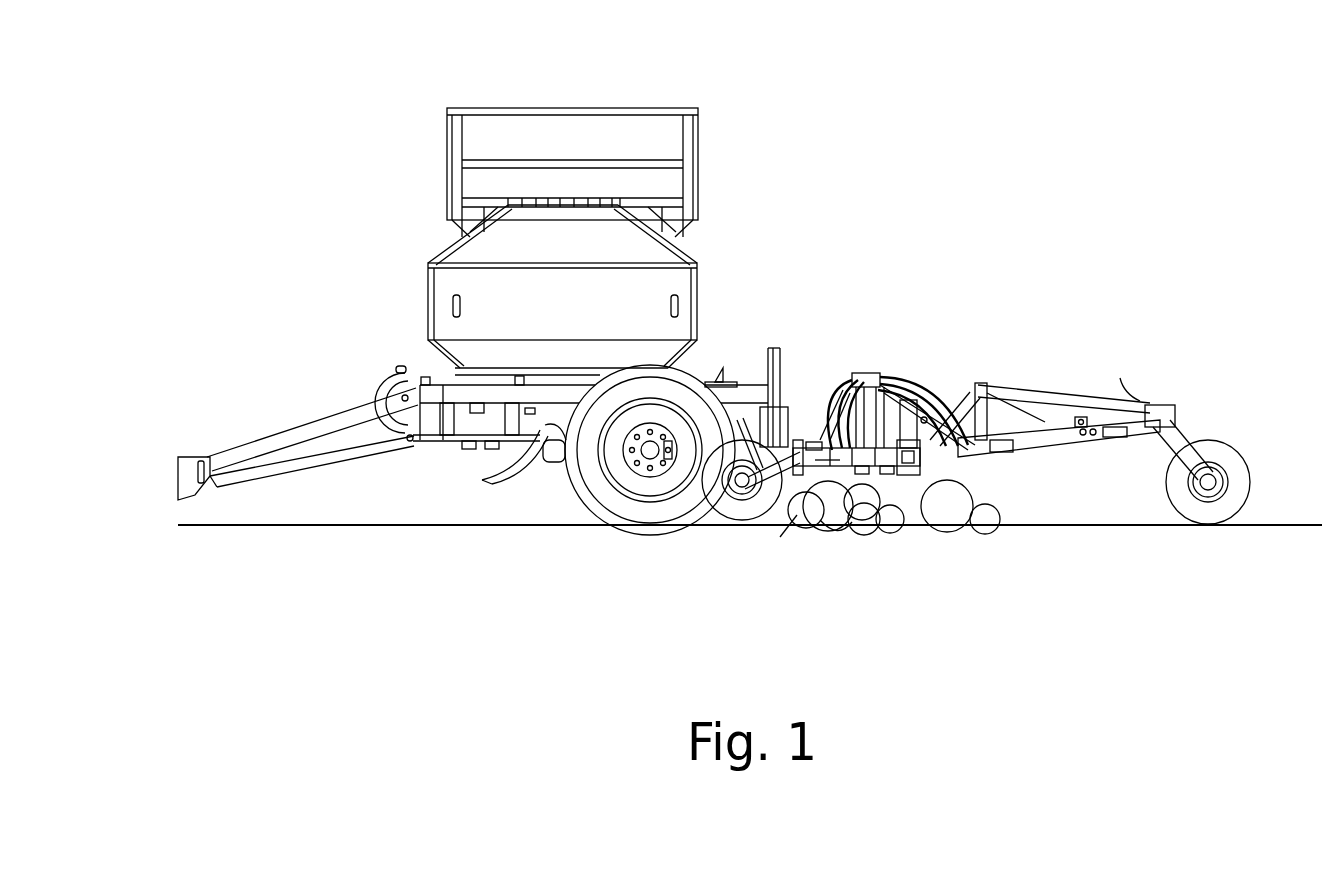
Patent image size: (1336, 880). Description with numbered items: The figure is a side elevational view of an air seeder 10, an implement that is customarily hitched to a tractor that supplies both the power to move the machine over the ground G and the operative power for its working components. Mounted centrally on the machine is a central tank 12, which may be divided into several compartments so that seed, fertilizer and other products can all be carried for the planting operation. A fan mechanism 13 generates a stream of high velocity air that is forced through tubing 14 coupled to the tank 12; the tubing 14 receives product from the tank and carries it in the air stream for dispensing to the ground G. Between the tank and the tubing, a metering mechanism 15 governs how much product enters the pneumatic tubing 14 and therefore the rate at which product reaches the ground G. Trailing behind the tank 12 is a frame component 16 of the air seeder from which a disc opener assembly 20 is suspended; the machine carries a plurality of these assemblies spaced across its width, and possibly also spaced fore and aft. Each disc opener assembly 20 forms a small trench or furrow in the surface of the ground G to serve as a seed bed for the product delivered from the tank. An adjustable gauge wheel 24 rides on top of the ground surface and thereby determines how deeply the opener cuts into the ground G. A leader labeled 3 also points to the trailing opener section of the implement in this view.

The air seeder 10 is at (738, 84).
The central tank 12 is at (650, 250).
The fan mechanism 13 is at (388, 378).
The tubing 14 is at (552, 468).
The metering mechanism 15 is at (482, 480).
The frame component 16 is at (833, 455).
The seeding tool 3 is at (976, 430).
The disc opener assembly 20 is at (800, 513).
The gauge wheel 24 is at (838, 522).
The ground G is at (222, 527).